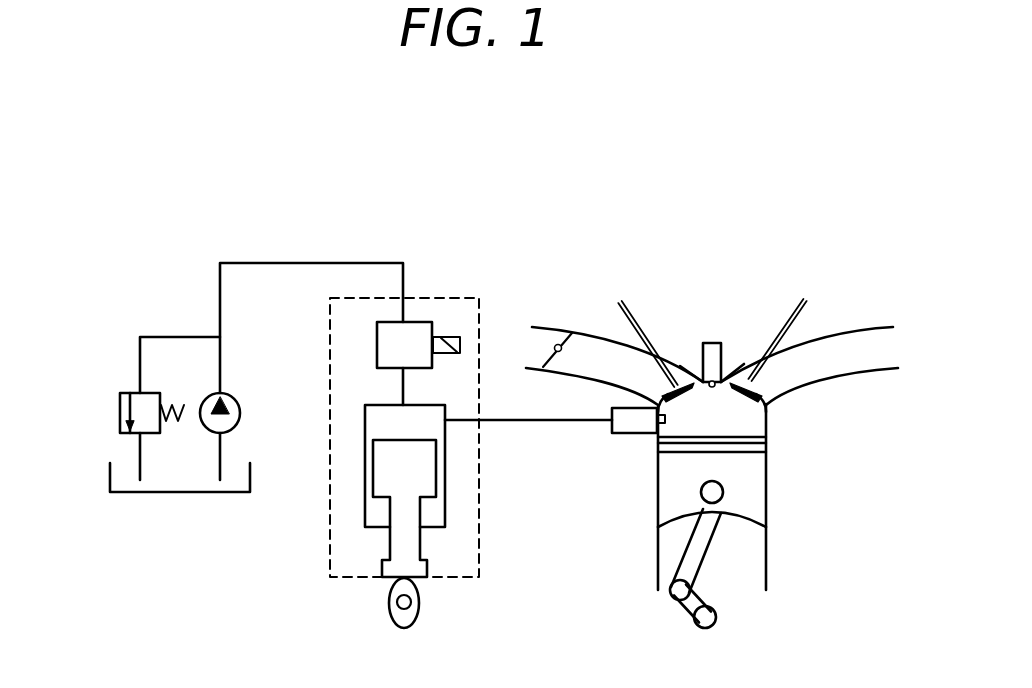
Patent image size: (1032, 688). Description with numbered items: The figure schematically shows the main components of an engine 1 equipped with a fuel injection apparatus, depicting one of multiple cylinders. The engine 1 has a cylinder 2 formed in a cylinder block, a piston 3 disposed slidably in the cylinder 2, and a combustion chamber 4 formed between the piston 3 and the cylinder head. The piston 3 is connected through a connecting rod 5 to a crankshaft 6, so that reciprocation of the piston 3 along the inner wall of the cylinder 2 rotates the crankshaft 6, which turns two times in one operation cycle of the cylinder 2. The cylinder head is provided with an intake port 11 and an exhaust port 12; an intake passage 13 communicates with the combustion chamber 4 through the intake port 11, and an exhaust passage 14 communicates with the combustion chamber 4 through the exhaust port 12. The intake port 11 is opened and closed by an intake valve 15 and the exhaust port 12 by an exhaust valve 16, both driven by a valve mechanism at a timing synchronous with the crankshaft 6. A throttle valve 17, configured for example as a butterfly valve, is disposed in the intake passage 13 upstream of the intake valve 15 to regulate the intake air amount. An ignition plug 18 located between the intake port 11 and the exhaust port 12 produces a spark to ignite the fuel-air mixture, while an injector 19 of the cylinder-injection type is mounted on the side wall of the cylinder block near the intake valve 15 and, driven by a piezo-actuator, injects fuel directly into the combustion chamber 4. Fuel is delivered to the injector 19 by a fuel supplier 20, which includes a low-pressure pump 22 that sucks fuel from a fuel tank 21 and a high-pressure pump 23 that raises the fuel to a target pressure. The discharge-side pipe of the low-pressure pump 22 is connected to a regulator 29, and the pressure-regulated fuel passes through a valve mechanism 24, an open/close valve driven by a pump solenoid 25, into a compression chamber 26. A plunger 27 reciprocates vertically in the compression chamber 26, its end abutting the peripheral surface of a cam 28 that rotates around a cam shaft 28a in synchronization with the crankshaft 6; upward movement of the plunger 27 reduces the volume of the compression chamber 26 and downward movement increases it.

The engine 1 is at (847, 255).
The cylinder 2 is at (767, 495).
The piston 3 is at (673, 487).
The combustion chamber 4 is at (723, 423).
The connecting rod 5 is at (680, 547).
The crankshaft 6 is at (697, 623).
The intake port 11 is at (668, 442).
The exhaust port 12 is at (768, 408).
The intake passage 13 is at (612, 355).
The exhaust passage 14 is at (832, 343).
The intake valve 15 is at (675, 365).
The exhaust valve 16 is at (742, 363).
The throttle valve 17 is at (557, 344).
The ignition plug 18 is at (712, 343).
The injector 19 is at (628, 433).
The fuel supplier 20 is at (453, 197).
The fuel tank 21 is at (110, 478).
The low-pressure pump 22 is at (240, 408).
The high-pressure pump 23 is at (330, 547).
The valve mechanism 24 is at (377, 347).
The pump solenoid 25 is at (446, 337).
The compression chamber 26 is at (375, 420).
The plunger 27 is at (385, 465).
The cam 28 is at (389, 602).
The cam shaft 28a is at (412, 603).
The regulator 29 is at (120, 413).